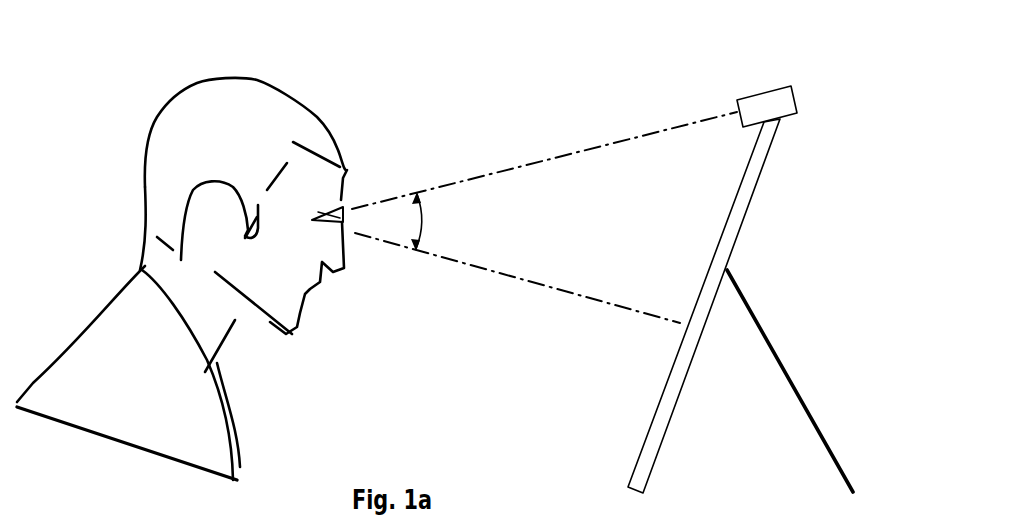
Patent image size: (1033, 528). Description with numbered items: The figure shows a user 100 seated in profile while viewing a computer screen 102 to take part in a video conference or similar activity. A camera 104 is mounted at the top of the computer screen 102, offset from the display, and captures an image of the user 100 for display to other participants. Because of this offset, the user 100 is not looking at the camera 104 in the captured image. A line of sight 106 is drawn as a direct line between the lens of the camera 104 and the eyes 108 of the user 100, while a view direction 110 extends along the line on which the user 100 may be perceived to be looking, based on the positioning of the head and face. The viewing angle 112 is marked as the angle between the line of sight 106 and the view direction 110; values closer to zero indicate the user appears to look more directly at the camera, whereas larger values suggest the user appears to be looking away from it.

The user 100 is at (113, 120).
The computer screen 102 is at (650, 427).
The camera 104 is at (765, 96).
The line of sight 106 is at (532, 164).
The eyes 108 is at (318, 212).
The view direction 110 is at (563, 290).
The viewing angle 112 is at (422, 224).